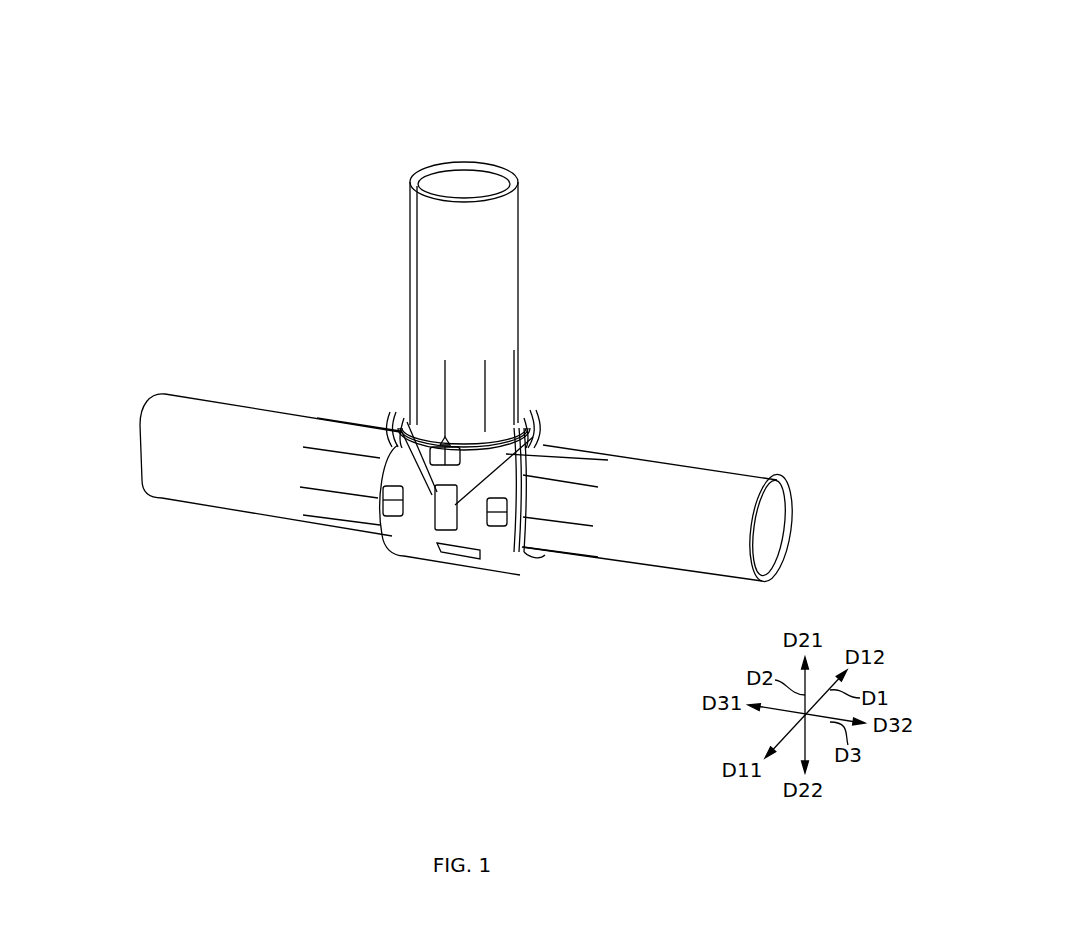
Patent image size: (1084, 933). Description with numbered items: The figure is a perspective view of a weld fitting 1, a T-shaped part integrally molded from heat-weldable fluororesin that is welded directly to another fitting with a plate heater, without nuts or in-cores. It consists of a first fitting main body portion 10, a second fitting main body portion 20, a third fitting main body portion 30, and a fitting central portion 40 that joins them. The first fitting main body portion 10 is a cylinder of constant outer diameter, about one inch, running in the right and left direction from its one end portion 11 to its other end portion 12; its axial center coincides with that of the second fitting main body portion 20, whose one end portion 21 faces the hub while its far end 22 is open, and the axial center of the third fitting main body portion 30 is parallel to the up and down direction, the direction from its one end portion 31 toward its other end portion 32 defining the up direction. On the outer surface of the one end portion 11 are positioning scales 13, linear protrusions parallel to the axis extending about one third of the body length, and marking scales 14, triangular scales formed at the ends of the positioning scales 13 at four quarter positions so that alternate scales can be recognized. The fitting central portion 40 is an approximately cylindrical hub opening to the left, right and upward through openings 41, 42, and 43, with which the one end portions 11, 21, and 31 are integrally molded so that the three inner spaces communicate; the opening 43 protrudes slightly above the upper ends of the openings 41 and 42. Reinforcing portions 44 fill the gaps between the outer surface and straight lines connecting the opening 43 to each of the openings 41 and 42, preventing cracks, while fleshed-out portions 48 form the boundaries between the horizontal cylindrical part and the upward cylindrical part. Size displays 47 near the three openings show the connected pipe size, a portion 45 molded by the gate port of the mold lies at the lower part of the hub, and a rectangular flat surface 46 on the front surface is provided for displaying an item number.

The weld fitting 1 is at (612, 82).
The first fitting main body portion 10 is at (241, 423).
The one end portion of the first fitting main body portion 11 is at (410, 540).
The other end portion of the first fitting main body portion 12 is at (138, 443).
The positioning scales 13 is at (300, 487).
The marking scales 14 is at (388, 447).
The second fitting main body portion 20 is at (678, 512).
The one end portion of the second fitting main body portion 21 is at (520, 556).
The second pipe end 22 is at (790, 532).
The third fitting main body portion 30 is at (480, 253).
The one end portion of the third fitting main body portion 31 is at (560, 456).
The other end portion of the third fitting main body portion 32 is at (495, 168).
The fitting central portion 40 is at (441, 484).
The opening of the fitting central portion for the first fitting main body portion 41 is at (375, 500).
The opening of the fitting central portion for the second fitting main body portion 42 is at (530, 548).
The opening of the fitting central portion for the third fitting main body portion 43 is at (515, 425).
The reinforcing portions 44 is at (400, 420).
The portion molded with a gate port 45 is at (455, 560).
The rectangular flat surface 46 is at (447, 512).
The size displays 47 is at (458, 445).
The fleshed-out portions 48 is at (385, 425).